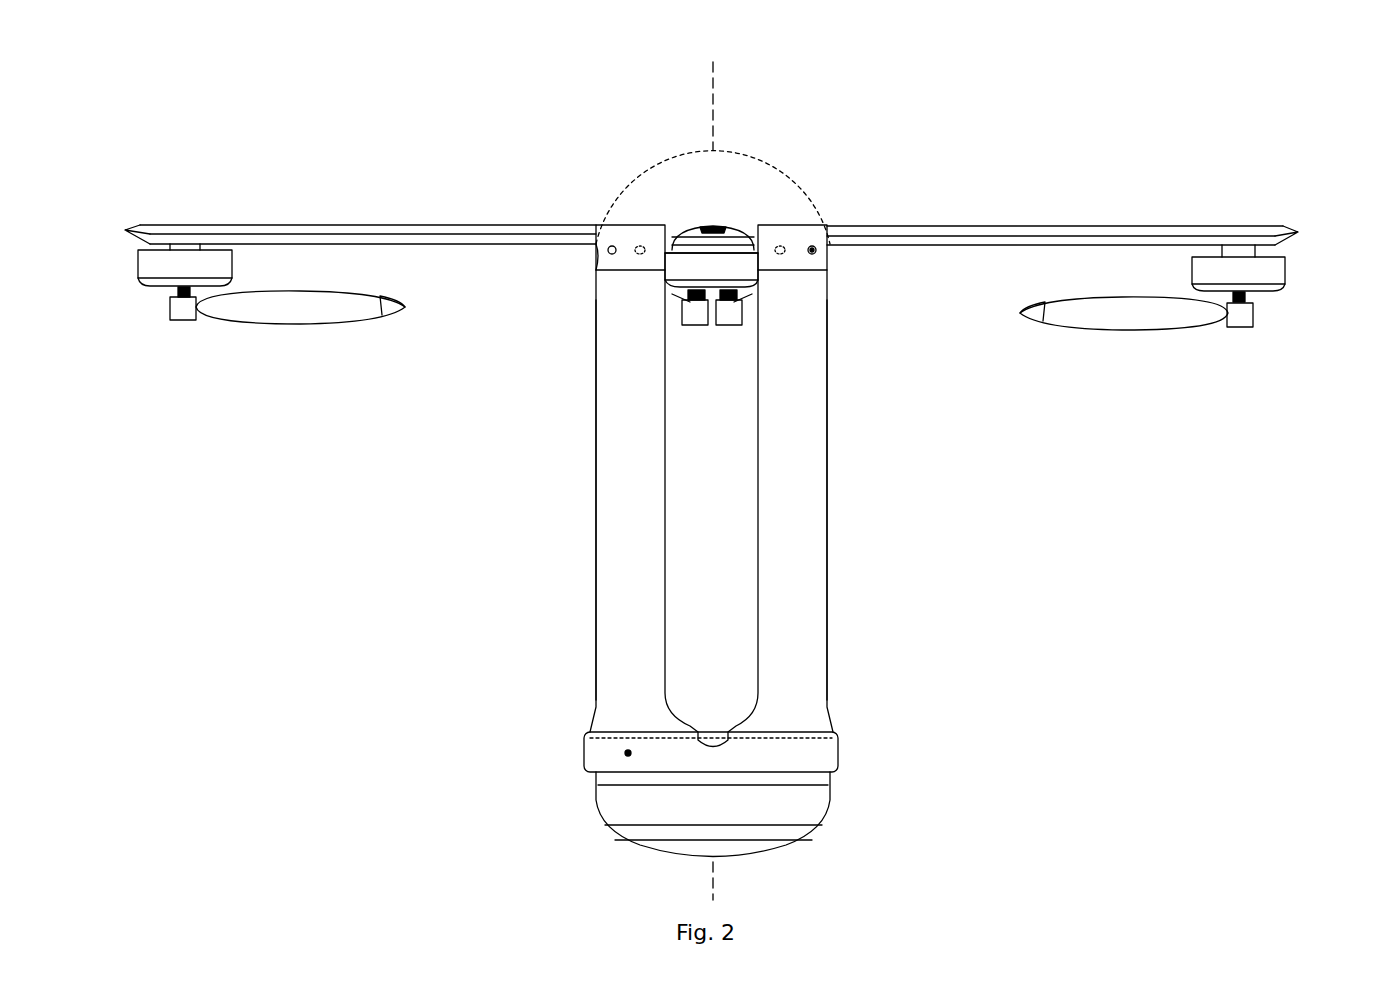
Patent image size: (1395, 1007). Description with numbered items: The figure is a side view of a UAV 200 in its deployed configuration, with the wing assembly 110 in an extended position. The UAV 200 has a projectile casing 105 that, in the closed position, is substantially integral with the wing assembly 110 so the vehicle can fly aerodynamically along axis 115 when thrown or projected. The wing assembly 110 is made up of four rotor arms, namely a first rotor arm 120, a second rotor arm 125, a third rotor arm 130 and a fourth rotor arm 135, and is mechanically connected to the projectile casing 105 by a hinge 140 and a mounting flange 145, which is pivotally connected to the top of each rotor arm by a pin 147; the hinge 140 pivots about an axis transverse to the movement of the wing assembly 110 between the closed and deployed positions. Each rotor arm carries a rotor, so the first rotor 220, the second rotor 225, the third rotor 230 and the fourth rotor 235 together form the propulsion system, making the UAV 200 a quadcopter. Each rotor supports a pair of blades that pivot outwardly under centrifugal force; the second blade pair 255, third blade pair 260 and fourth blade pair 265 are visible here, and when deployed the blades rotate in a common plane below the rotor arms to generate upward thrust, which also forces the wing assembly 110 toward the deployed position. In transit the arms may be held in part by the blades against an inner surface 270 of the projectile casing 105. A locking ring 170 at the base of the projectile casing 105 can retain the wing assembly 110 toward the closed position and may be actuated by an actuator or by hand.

The UAV 200 is at (948, 108).
The axis 115 is at (742, 478).
The projectile casing 105 is at (786, 551).
The third rotor arm 130 is at (847, 390).
The third rotor 230 is at (847, 390).
The wing assembly 110 is at (628, 232).
The hinge 140 is at (612, 242).
The mounting flange 145 is at (823, 238).
The pin 147 is at (815, 250).
The second rotor arm 125 is at (275, 224).
The fourth rotor arm 135 is at (1073, 226).
The second rotor 225 is at (152, 265).
The fourth rotor 235 is at (1262, 270).
The pair of blades 255 is at (318, 308).
The pair of blades 265 is at (1140, 317).
The first rotor arm 120 is at (715, 230).
The first rotor 220 is at (743, 270).
The pair of blades 260 is at (740, 313).
The inner surface 270 is at (640, 513).
The locking ring 170 is at (810, 755).